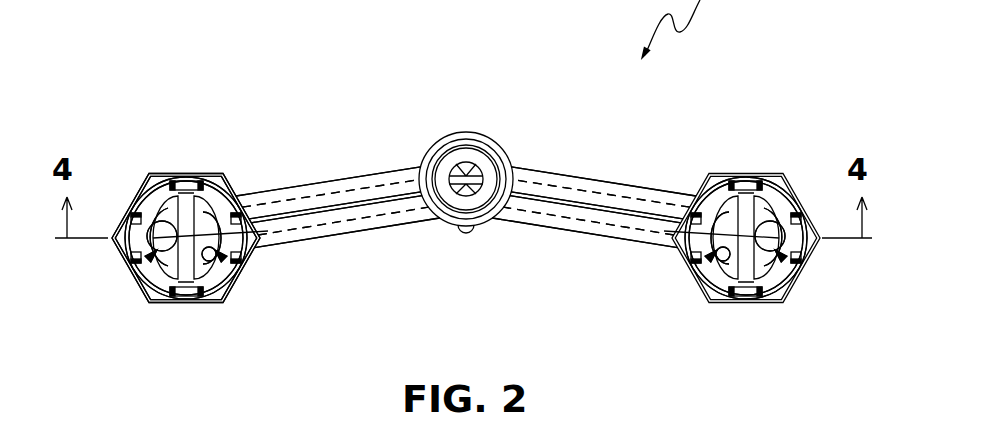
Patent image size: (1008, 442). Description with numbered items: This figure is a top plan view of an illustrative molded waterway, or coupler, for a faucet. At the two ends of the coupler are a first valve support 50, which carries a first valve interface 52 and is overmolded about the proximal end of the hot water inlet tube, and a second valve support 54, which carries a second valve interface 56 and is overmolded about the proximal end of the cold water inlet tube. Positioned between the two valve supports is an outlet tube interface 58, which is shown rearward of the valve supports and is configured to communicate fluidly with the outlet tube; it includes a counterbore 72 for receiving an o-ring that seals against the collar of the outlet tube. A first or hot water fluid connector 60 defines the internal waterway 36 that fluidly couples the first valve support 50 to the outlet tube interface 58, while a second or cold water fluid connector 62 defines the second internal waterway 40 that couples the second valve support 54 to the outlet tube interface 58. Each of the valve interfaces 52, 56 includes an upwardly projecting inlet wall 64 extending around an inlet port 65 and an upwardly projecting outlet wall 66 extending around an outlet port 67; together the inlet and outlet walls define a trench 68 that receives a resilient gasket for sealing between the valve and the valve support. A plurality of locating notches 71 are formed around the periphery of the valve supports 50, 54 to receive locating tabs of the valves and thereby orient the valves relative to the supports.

The internal waterway 36 is at (378, 215).
The second internal waterway 40 is at (542, 212).
The first valve support 50 is at (202, 175).
The first valve interface 52 is at (160, 296).
The second valve support 54 is at (733, 177).
The second valve interface 56 is at (770, 296).
The outlet tube interface 58 is at (452, 133).
The first fluid connector 60 is at (342, 178).
The second fluid connector 62 is at (565, 170).
The inlet wall 64 is at (466, 207).
The inlet port 65 is at (466, 260).
The outlet wall 66 is at (230, 180).
The outlet port 67 is at (466, 278).
The trench 68 is at (193, 304).
The locating notches 71 is at (187, 177).
The counterbore 72 is at (476, 160).